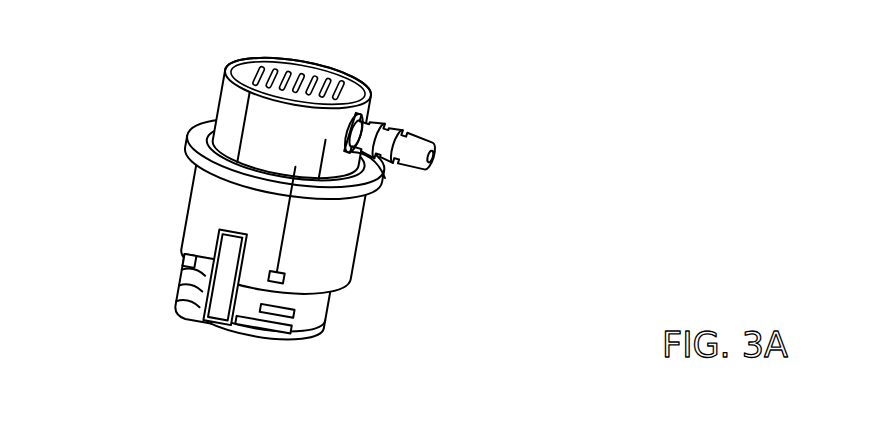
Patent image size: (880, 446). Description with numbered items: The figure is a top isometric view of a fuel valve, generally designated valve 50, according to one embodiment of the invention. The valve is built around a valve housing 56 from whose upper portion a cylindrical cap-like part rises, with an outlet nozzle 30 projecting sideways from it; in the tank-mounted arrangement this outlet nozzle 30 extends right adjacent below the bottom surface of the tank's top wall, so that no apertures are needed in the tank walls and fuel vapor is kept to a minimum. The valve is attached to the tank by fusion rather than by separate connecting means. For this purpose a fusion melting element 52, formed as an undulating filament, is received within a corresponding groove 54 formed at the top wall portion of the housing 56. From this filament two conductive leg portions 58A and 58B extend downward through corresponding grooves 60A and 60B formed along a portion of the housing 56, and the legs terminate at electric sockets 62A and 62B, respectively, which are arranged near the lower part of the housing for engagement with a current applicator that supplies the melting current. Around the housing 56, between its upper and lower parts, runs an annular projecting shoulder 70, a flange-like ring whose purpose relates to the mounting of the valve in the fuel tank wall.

The outlet nozzle 30 is at (440, 157).
The valve 50 is at (277, 214).
The fusion melting element 52 is at (245, 60).
The groove 54 is at (367, 84).
The valve housing 56 is at (337, 252).
The conductive leg portion 58A is at (244, 107).
The conductive leg portion 58B is at (383, 172).
The groove 60A is at (195, 203).
The groove 60B is at (287, 240).
The electric socket 62A is at (193, 260).
The electric socket 62B is at (280, 280).
The annular projecting shoulder 70 is at (183, 147).